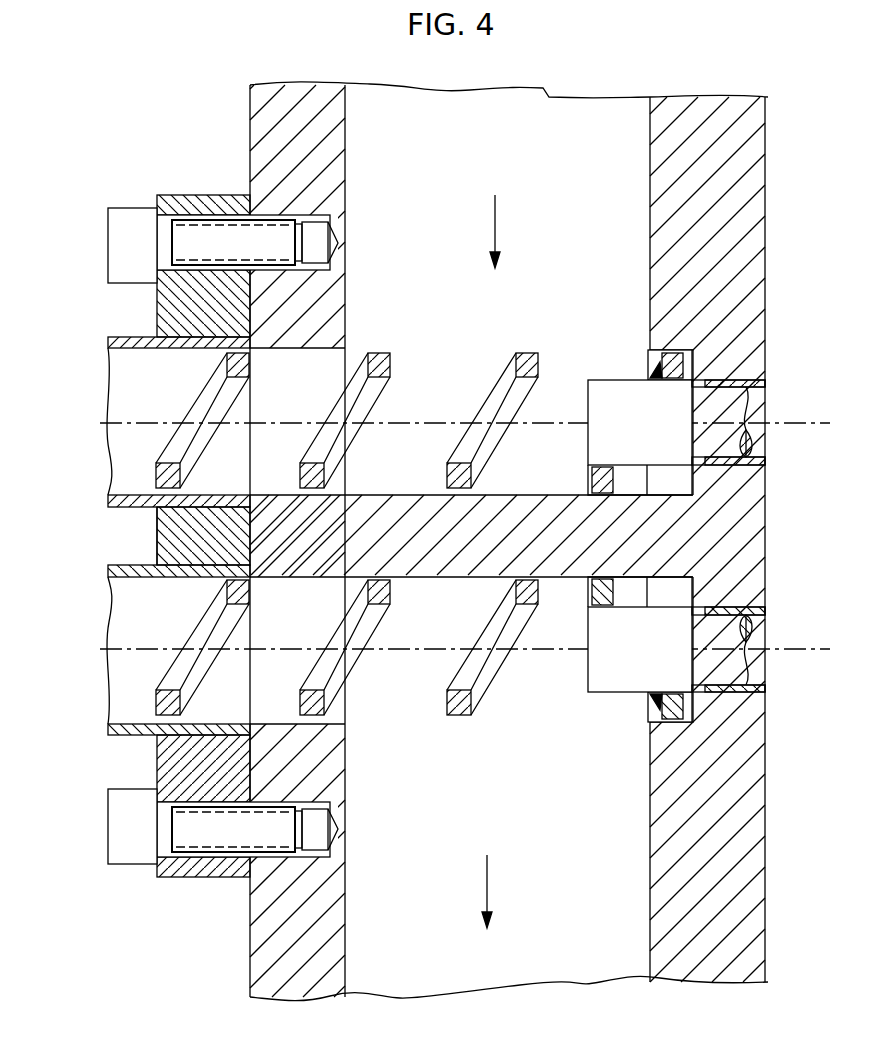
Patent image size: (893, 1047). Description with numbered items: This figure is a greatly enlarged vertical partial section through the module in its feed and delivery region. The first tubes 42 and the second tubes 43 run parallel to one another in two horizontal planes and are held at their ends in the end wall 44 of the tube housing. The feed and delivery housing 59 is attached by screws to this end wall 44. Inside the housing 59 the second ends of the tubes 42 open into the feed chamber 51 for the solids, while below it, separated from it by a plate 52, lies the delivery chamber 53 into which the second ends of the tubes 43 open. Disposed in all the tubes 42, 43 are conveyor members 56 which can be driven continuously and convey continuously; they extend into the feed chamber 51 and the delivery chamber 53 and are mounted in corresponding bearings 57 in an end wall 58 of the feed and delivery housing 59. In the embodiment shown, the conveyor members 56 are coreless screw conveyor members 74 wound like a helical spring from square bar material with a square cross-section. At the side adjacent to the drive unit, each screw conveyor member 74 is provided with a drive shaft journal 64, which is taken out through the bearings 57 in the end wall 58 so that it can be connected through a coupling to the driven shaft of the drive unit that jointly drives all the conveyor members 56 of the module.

The first tubes 42 is at (152, 391).
The second tubes 43 is at (155, 618).
The end wall 44 is at (194, 203).
The feed chamber 51 is at (586, 194).
The plate 52 is at (396, 512).
The delivery chamber 53 is at (594, 884).
The conveyor members 56 is at (487, 367).
The bearings 57 is at (762, 460).
The end wall 58 is at (722, 803).
The feed and delivery housing 59 is at (660, 85).
The drive shaft journals 64 is at (730, 404).
The coreless screw conveyor members 74 is at (384, 350).